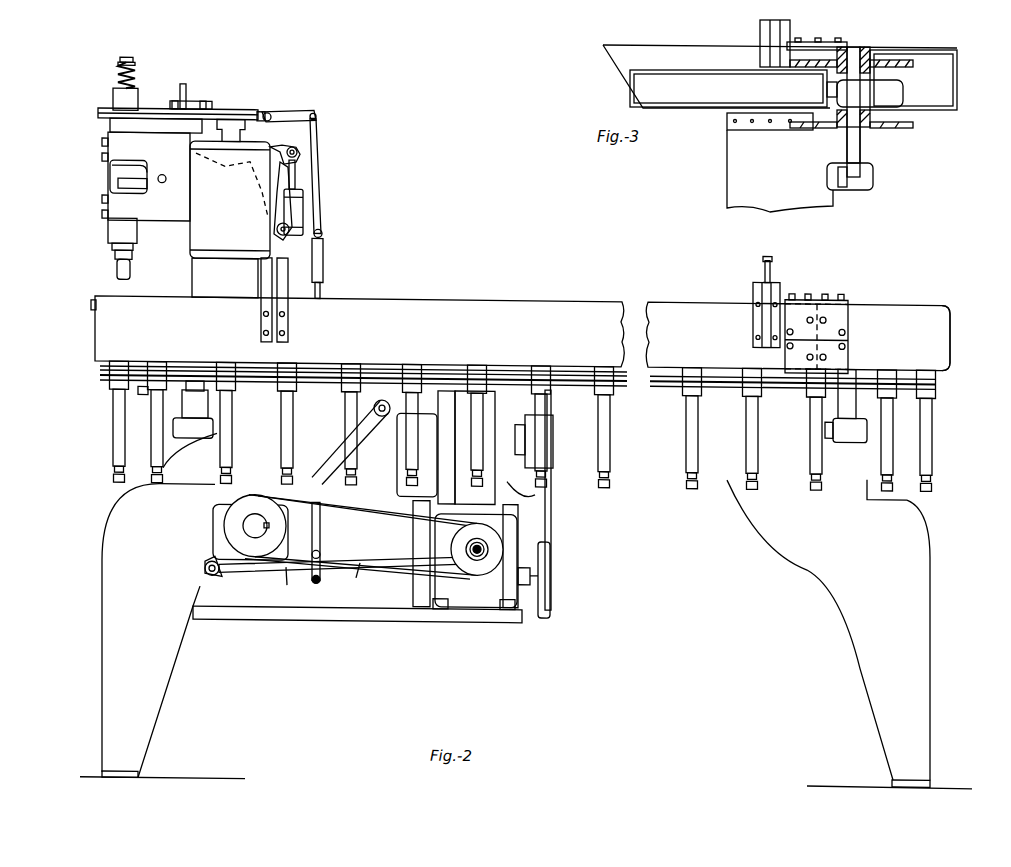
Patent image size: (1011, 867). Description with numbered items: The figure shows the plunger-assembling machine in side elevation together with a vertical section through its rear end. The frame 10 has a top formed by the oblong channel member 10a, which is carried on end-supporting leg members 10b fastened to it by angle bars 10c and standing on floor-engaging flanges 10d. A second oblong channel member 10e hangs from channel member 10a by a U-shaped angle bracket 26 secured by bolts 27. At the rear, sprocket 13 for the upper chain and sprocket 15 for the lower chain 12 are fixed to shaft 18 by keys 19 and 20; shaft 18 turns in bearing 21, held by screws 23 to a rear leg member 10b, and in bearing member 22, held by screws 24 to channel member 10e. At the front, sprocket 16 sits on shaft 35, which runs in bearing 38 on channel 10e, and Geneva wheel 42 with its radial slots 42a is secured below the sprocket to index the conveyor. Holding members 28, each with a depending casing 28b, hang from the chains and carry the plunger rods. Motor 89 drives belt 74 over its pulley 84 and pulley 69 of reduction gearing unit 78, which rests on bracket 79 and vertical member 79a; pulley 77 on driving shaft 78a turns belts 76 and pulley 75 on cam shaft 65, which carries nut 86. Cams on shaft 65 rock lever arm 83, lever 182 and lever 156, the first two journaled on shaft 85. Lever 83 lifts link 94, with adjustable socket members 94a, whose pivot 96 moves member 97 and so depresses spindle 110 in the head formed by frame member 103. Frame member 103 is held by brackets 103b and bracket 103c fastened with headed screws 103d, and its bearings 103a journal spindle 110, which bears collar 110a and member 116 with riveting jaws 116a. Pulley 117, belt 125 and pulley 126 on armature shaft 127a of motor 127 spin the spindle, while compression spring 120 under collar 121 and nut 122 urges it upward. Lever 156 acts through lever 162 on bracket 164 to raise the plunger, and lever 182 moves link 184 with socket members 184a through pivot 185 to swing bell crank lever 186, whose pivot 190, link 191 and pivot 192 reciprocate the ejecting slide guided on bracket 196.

In FIG. 2, the frame 10 is at (648, 300).
In FIG. 3, the frame 10 is at (694, 52).
In FIG. 2, the channel member 10a is at (950, 340).
In FIG. 3, the channel member 10a is at (957, 91).
In FIG. 2, the leg member 10b is at (180, 659).
In FIG. 3, the leg member 10b is at (740, 182).
In FIG. 3, the angle bar 10c is at (742, 132).
In FIG. 2, the flange 10d is at (138, 770).
In FIG. 3, the channel member 10e is at (640, 76).
In FIG. 2, the link chain 12 is at (672, 382).
In FIG. 3, the sprocket 13 is at (892, 60).
In FIG. 3, the sprocket 15 is at (913, 125).
In FIG. 2, the sprocket 16 is at (198, 366).
In FIG. 2, the shaft 18 is at (848, 412).
In FIG. 3, the shaft 18 is at (860, 155).
In FIG. 3, the key 19 is at (855, 47).
In FIG. 3, the key 20 is at (860, 135).
In FIG. 2, the bearing 21 is at (867, 428).
In FIG. 3, the bearing 21 is at (873, 177).
In FIG. 3, the bearing member 22 is at (880, 88).
In FIG. 2, the bolts or screws 23 is at (845, 436).
In FIG. 3, the bolts or screws 23 is at (870, 186).
In FIG. 3, the bolts or screws 24 is at (860, 79).
In FIG. 2, the U-shaped angle bracket 26 is at (772, 285).
In FIG. 3, the U-shaped angle bracket 26 is at (780, 40).
In FIG. 2, the bolts 27 is at (755, 306).
In FIG. 2, the holding member 28 is at (110, 376).
In FIG. 2, the casing 28b is at (117, 421).
In FIG. 2, the shaft 35 is at (205, 402).
In FIG. 2, the bearing 38 is at (173, 430).
In FIG. 2, the Geneva wheel 42 is at (138, 388).
In FIG. 2, the slot 42a is at (200, 392).
In FIG. 2, the shaft 65 is at (245, 527).
In FIG. 2, the pulley 69 is at (552, 608).
In FIG. 2, the belt 74 is at (552, 522).
In FIG. 2, the pulley 75 is at (228, 520).
In FIG. 2, the belts 76 is at (398, 563).
In FIG. 2, the pulley 77 is at (475, 565).
In FIG. 2, the reduction gearing unit 78 is at (517, 526).
In FIG. 2, the driving shaft 78a is at (482, 560).
In FIG. 2, the bracket 79 is at (375, 614).
In FIG. 2, the vertical member 79a is at (413, 528).
In FIG. 2, the lever arm 83 is at (252, 572).
In FIG. 2, the driving pulley 84 is at (548, 428).
In FIG. 2, the shaft 85 is at (204, 569).
In FIG. 2, the nut 86 is at (205, 565).
In FIG. 2, the motor 89 is at (546, 472).
In FIG. 2, the link 94 is at (322, 500).
In FIG. 2, the socket member 94a is at (300, 196).
In FIG. 2, the pivot 96 is at (298, 151).
In FIG. 2, the member 97 is at (305, 172).
In FIG. 2, the frame member 103 is at (153, 218).
In FIG. 2, the bearing 103a is at (120, 147).
In FIG. 2, the bracket 103b is at (289, 322).
In FIG. 2, the bracket 103c is at (108, 253).
In FIG. 2, the headed screws 103d is at (91, 304).
In FIG. 2, the spindle 110 is at (118, 188).
In FIG. 2, the collar 110a is at (118, 180).
In FIG. 2, the member 116 is at (132, 257).
In FIG. 2, the spinning or riveting jaws 116a is at (130, 274).
In FIG. 2, the pulley 117 is at (113, 97).
In FIG. 2, the coiled compression spring 120 is at (118, 72).
In FIG. 2, the collar or washer 121 is at (135, 64).
In FIG. 2, the nut 122 is at (127, 57).
In FIG. 2, the belt 125 is at (98, 113).
In FIG. 2, the pulley 126 is at (232, 104).
In FIG. 2, the motor 127 is at (210, 211).
In FIG. 2, the armature shaft 127a is at (245, 128).
In FIG. 2, the lever 156 is at (359, 572).
In FIG. 2, the lever 162 is at (357, 420).
In FIG. 2, the bracket 164 is at (380, 368).
In FIG. 2, the lever 182 is at (292, 584).
In FIG. 2, the link 184 is at (321, 290).
In FIG. 2, the socket member 184a is at (324, 265).
In FIG. 2, the pivot 185 is at (322, 233).
In FIG. 2, the bell crank lever 186 is at (316, 131).
In FIG. 2, the pivot 190 is at (316, 115).
In FIG. 2, the link 191 is at (300, 110).
In FIG. 2, the pivot 192 is at (270, 112).
In FIG. 2, the bracket 196 is at (183, 90).